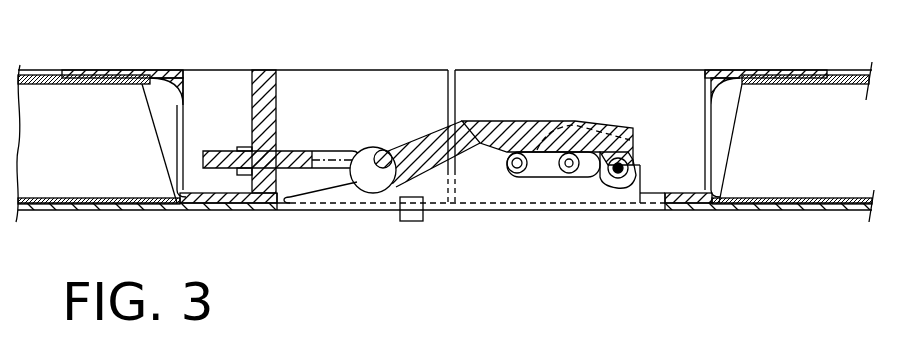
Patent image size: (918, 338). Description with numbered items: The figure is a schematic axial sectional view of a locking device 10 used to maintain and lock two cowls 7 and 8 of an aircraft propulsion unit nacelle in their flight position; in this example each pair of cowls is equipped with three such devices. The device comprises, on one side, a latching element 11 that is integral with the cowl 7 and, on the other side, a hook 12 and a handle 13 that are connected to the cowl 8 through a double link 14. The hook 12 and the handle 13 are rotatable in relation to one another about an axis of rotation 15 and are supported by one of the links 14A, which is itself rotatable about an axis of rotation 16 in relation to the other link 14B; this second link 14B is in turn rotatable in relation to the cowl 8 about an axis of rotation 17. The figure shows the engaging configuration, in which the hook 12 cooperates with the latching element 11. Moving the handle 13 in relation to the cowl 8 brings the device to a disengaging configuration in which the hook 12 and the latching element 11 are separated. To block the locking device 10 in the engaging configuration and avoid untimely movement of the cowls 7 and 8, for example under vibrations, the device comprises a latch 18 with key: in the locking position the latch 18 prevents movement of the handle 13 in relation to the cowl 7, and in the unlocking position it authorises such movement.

The cowl 7 is at (218, 85).
The cowl 8 is at (688, 75).
The locking device 10 is at (413, 255).
The latching element 11 is at (300, 150).
The hook 12 is at (510, 120).
The handle 13 is at (350, 207).
The double link 14 is at (608, 236).
The link 14A is at (612, 205).
The link 14B is at (548, 177).
The axis of rotation 15 is at (627, 158).
The axis of rotation 16 is at (569, 153).
The axis of rotation 17 is at (512, 156).
The latch 18 is at (407, 220).